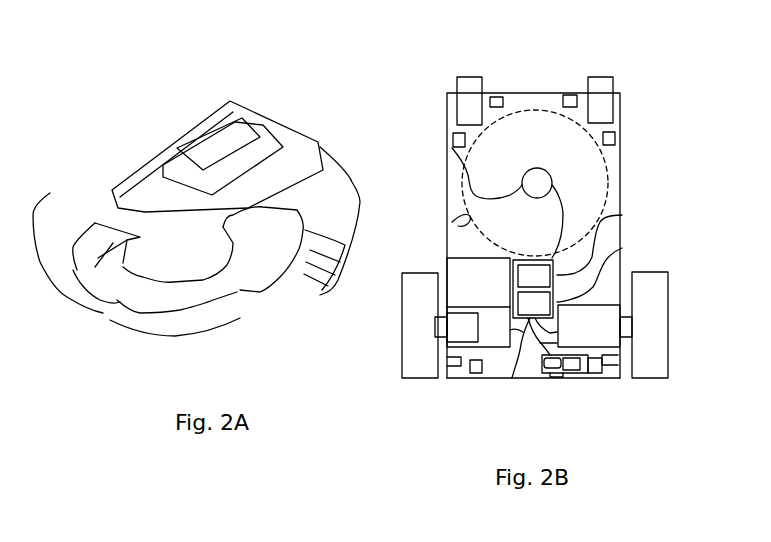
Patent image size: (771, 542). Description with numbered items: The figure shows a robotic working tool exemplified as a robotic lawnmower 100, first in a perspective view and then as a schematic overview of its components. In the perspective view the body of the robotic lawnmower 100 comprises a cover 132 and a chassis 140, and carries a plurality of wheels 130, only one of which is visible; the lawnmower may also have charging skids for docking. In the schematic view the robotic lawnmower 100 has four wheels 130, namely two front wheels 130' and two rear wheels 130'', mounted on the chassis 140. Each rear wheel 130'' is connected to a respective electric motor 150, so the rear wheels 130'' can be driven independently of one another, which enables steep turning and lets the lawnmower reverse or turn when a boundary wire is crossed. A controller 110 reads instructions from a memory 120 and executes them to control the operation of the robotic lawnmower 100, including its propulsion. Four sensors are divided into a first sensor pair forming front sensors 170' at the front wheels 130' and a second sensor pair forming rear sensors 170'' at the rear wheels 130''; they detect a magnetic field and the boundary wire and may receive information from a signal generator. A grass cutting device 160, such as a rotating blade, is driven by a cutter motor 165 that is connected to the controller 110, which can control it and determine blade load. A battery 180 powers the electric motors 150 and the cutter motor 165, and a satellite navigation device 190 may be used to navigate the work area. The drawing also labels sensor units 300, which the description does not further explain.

In FIG. 2A, the robotic lawnmower 100 is at (316, 123).
In FIG. 2B, the robotic lawnmower 100 is at (395, 78).
In FIG. 2B, the controller 110 is at (622, 215).
In FIG. 2B, the memory 120 is at (622, 248).
In FIG. 2B, the wheels 130 is at (535, 71).
In FIG. 2A, the front wheels 130' is at (329, 283).
In FIG. 2B, the rear wheels 130'' is at (513, 360).
In FIG. 2A, the cover 132 is at (97, 269).
In FIG. 2A, the chassis 140 is at (278, 293).
In FIG. 2B, the chassis 140 is at (462, 380).
In FIG. 2B, the electric motor 150 is at (557, 378).
In FIG. 2B, the grass cutting device 160 is at (452, 222).
In FIG. 2B, the cutter motor 165 is at (447, 143).
In FIG. 2B, the front sensors 170' is at (533, 66).
In FIG. 2B, the rear sensors 170'' is at (527, 401).
In FIG. 2B, the battery 180 is at (458, 275).
In FIG. 2B, the satellite navigation device 190 is at (567, 380).
In FIG. 2B, the sensor module 300 is at (440, 123).